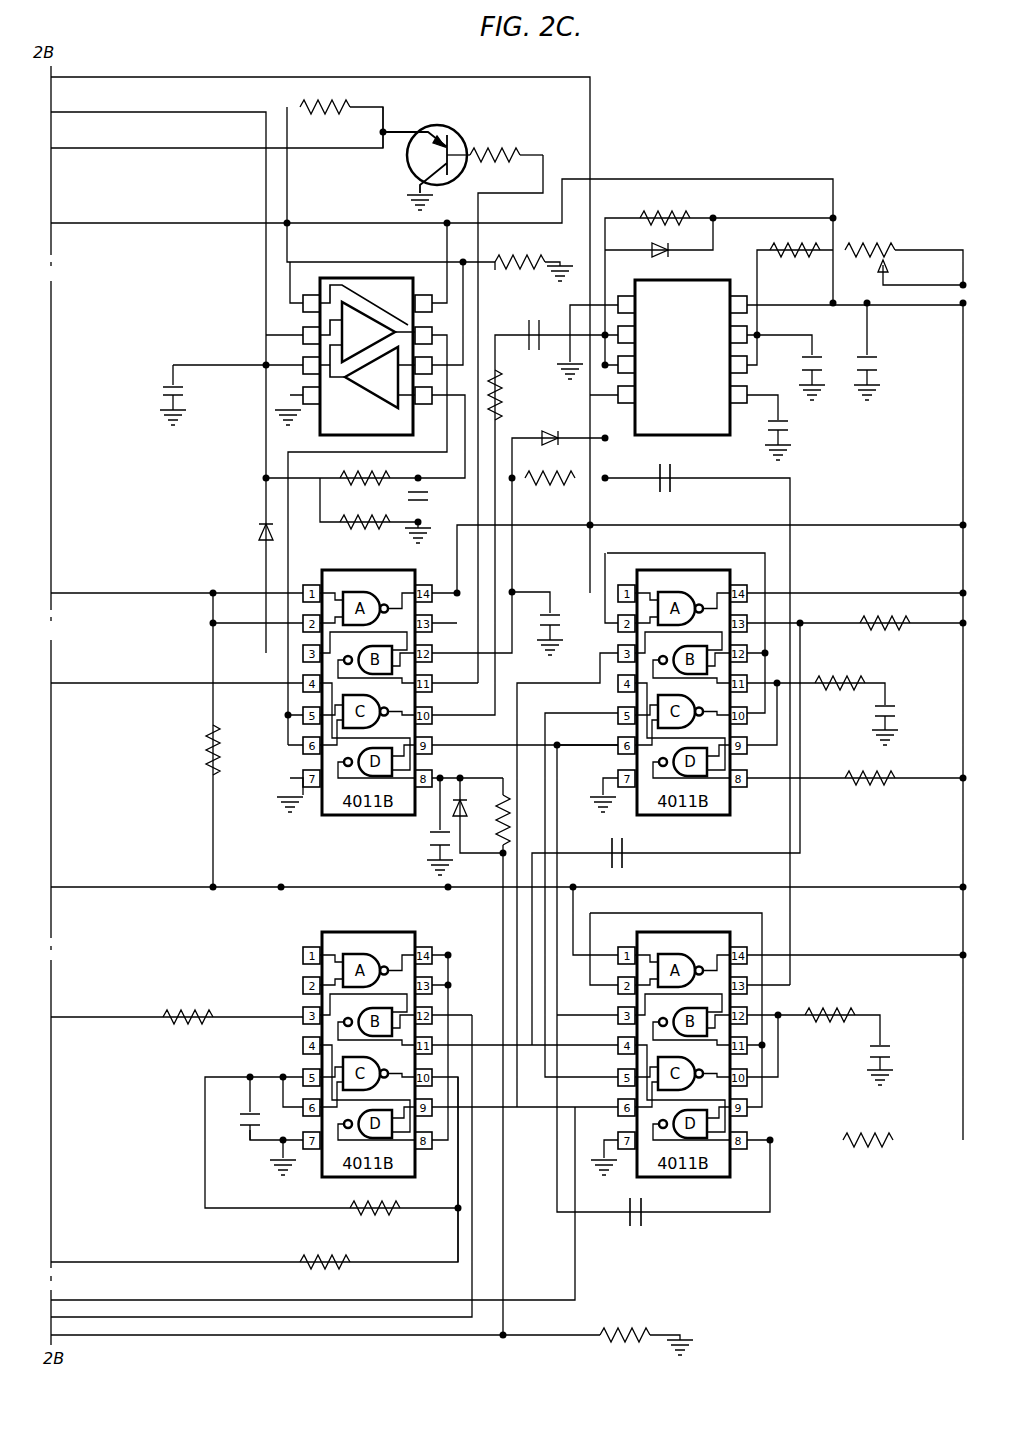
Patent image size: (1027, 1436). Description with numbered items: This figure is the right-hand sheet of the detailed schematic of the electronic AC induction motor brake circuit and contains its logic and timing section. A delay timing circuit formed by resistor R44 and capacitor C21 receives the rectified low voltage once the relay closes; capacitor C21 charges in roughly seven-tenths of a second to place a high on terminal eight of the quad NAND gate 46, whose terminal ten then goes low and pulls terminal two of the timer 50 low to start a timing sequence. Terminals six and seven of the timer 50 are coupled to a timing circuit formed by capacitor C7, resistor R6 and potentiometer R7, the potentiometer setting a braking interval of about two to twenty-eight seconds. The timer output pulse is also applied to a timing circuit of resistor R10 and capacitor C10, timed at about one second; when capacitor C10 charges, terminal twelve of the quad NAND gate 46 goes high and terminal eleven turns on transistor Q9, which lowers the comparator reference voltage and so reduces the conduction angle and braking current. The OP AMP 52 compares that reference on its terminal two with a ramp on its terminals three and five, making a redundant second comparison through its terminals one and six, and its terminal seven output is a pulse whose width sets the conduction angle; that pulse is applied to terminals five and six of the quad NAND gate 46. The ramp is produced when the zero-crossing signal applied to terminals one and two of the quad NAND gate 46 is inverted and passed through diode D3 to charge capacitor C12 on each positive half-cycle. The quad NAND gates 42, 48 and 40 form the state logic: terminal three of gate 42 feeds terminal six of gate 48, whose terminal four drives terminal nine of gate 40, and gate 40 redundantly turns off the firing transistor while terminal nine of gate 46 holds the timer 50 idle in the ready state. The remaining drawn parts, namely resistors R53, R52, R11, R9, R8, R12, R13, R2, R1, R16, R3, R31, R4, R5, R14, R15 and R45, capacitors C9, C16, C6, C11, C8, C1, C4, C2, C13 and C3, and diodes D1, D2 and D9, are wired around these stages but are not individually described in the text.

The resistor R53 is at (343, 124).
The transistor Q9 is at (446, 128).
The resistor R52 is at (506, 165).
The resistor R11 is at (534, 272).
The resistor R9 is at (665, 209).
The diode D1 is at (644, 259).
The resistor R6 is at (795, 260).
The potentiometer R7 is at (900, 240).
The timer 50 is at (720, 283).
The OP AMP 52 is at (412, 418).
The capacitor C12 is at (165, 383).
The capacitor C9 is at (532, 345).
The capacitor C7 is at (801, 367).
The capacitor C16 is at (884, 351).
The capacitor C6 is at (800, 428).
The resistor R8 is at (507, 395).
The diode D2 is at (555, 426).
The resistor R12 is at (365, 488).
The capacitor C11 is at (428, 498).
The resistor R13 is at (365, 533).
The resistor R10 is at (550, 488).
The capacitor C8 is at (664, 488).
The diode D3 is at (257, 534).
The capacitor C10 is at (551, 623).
The resistor R2 is at (885, 633).
The resistor R1 is at (840, 693).
The capacitor C1 is at (898, 725).
The resistor R16 is at (194, 750).
The resistor R3 is at (870, 787).
The diode D9 is at (478, 815).
The capacitor C21 is at (428, 844).
The resistor R44 is at (490, 830).
The quad NAND gate 46 is at (330, 818).
The quad NAND gate 48 is at (722, 818).
The capacitor C4 is at (625, 848).
The quad NAND gate 40 is at (408, 930).
The quad NAND gate 42 is at (722, 1180).
The resistor R31 is at (188, 1026).
The resistor R4 is at (830, 1026).
The capacitor C2 is at (892, 1065).
The capacitor C13 is at (244, 1118).
The resistor R5 is at (868, 1149).
The resistor R14 is at (375, 1216).
The resistor R15 is at (325, 1271).
The resistor R45 is at (646, 1345).
The capacitor C3 is at (622, 1225).